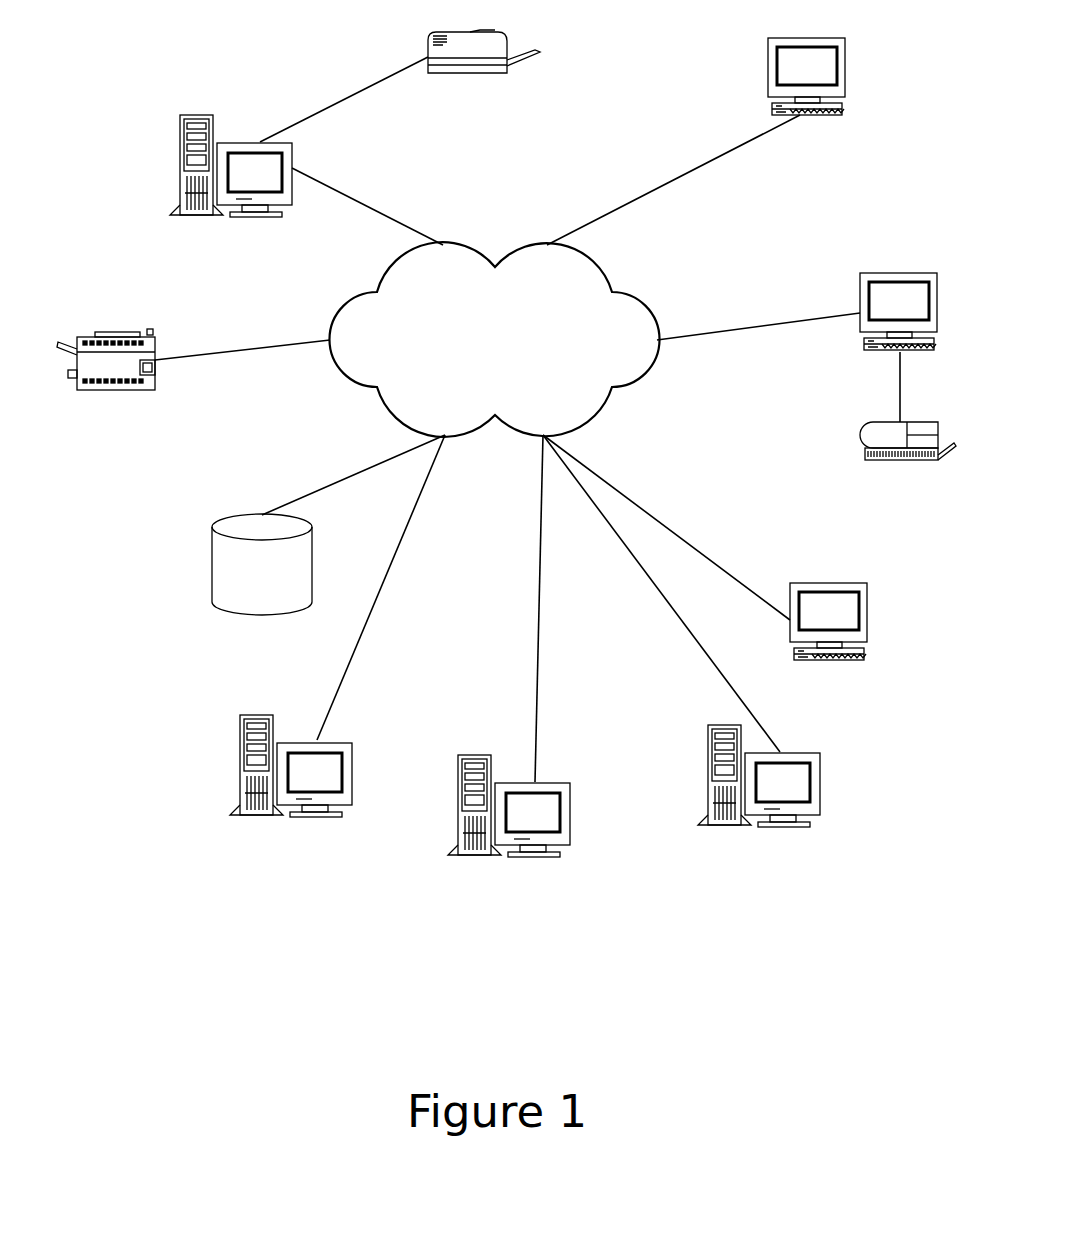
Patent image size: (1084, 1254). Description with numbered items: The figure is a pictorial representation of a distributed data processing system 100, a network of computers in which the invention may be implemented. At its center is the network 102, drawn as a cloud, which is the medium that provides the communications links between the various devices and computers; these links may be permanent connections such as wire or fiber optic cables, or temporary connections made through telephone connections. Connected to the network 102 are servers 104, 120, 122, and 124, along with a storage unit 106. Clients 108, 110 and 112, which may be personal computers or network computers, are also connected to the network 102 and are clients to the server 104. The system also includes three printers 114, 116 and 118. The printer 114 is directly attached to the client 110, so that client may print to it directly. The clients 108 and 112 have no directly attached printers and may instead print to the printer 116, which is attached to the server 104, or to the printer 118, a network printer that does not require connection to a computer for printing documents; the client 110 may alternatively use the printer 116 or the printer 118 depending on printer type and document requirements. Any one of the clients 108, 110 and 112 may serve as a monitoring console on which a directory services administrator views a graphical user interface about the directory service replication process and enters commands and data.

The distributed data processing system 100 is at (469, 1036).
The network 102 is at (475, 351).
The server 104 is at (212, 247).
The storage unit 106 is at (239, 659).
The client 108 is at (794, 26).
The client 110 is at (880, 257).
The client 112 is at (812, 569).
The printer 114 is at (880, 491).
The printer 116 is at (450, 106).
The printer 118 is at (95, 422).
The server 120 is at (291, 781).
The server 122 is at (509, 821).
The server 124 is at (759, 791).